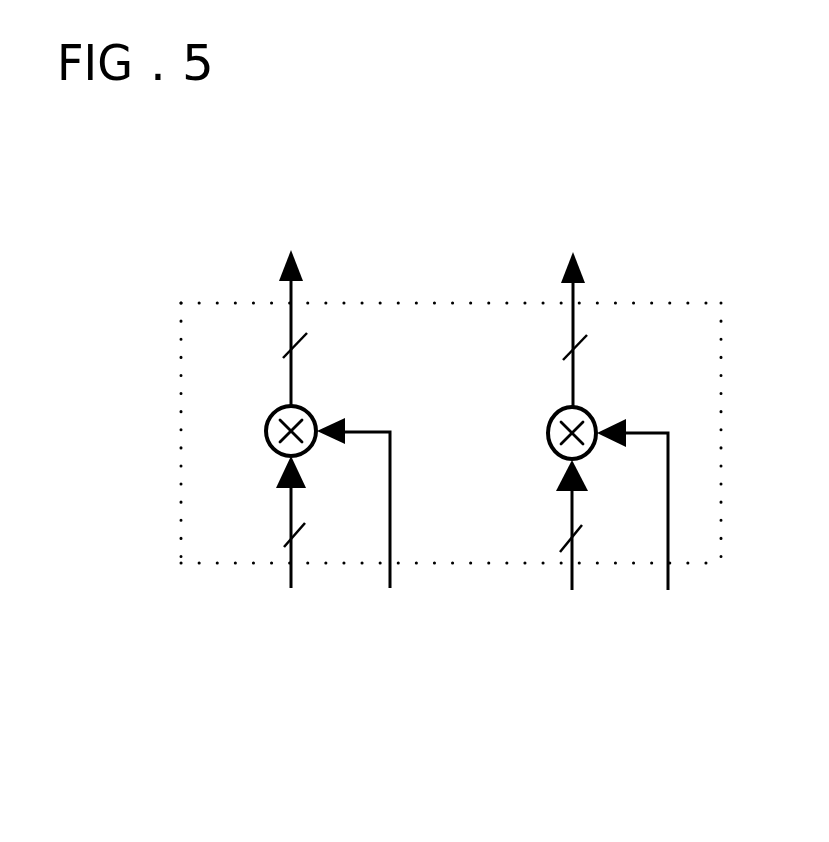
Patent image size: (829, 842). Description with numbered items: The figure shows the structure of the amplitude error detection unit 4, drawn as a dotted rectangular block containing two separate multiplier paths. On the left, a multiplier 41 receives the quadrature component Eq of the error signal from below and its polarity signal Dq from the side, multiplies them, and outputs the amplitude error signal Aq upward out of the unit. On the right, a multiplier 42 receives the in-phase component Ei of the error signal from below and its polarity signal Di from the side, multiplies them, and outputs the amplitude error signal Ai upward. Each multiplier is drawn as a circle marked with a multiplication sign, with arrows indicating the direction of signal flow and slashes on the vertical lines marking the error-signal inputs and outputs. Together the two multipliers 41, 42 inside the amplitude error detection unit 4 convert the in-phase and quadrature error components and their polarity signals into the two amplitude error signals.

The amplitude error detection unit 4 is at (235, 302).
The multiplier 41 is at (305, 407).
The multiplier 42 is at (587, 408).